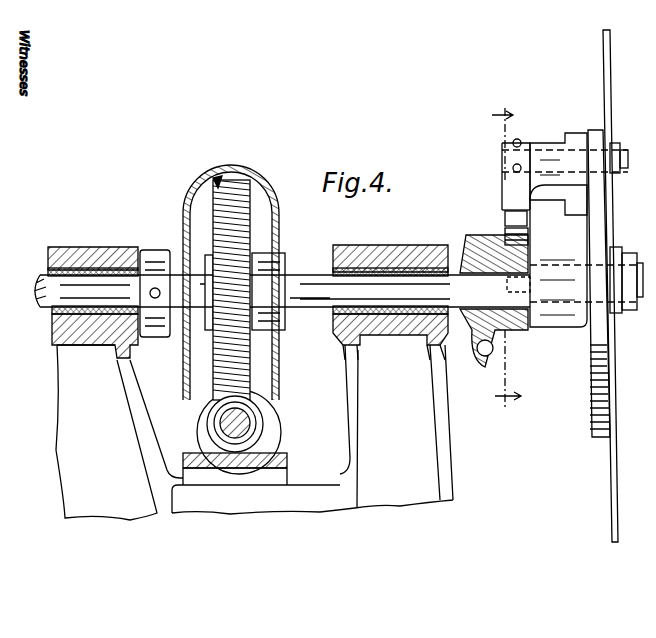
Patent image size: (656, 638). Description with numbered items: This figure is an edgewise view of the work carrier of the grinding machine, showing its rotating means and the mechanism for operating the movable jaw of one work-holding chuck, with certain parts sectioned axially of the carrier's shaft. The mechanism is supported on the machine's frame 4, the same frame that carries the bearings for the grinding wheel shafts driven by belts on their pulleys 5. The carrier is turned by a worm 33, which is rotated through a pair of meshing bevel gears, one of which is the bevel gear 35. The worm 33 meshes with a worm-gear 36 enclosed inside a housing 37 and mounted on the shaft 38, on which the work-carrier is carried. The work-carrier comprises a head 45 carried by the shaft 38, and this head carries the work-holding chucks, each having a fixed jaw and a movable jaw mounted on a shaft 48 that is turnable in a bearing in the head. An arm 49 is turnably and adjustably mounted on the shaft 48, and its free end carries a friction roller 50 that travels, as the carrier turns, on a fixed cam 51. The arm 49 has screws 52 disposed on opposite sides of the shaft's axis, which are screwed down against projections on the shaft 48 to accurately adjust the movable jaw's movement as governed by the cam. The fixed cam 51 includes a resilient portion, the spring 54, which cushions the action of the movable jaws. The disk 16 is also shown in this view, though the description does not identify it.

The frame 4 is at (404, 430).
The pulleys 5 is at (499, 259).
The wheel disk 16 is at (607, 90).
The worm 33 is at (250, 420).
The bevel gear 35 is at (262, 408).
The worm-gear 36 is at (250, 364).
The housing 37 is at (277, 233).
The shaft 38 is at (311, 300).
The head 45 is at (590, 213).
The shaft 48 is at (498, 168).
The arm 49 is at (516, 197).
The friction roller 50 is at (506, 216).
The fixed cam 51 is at (530, 238).
The screws 52 is at (521, 165).
The spring 54 is at (482, 232).